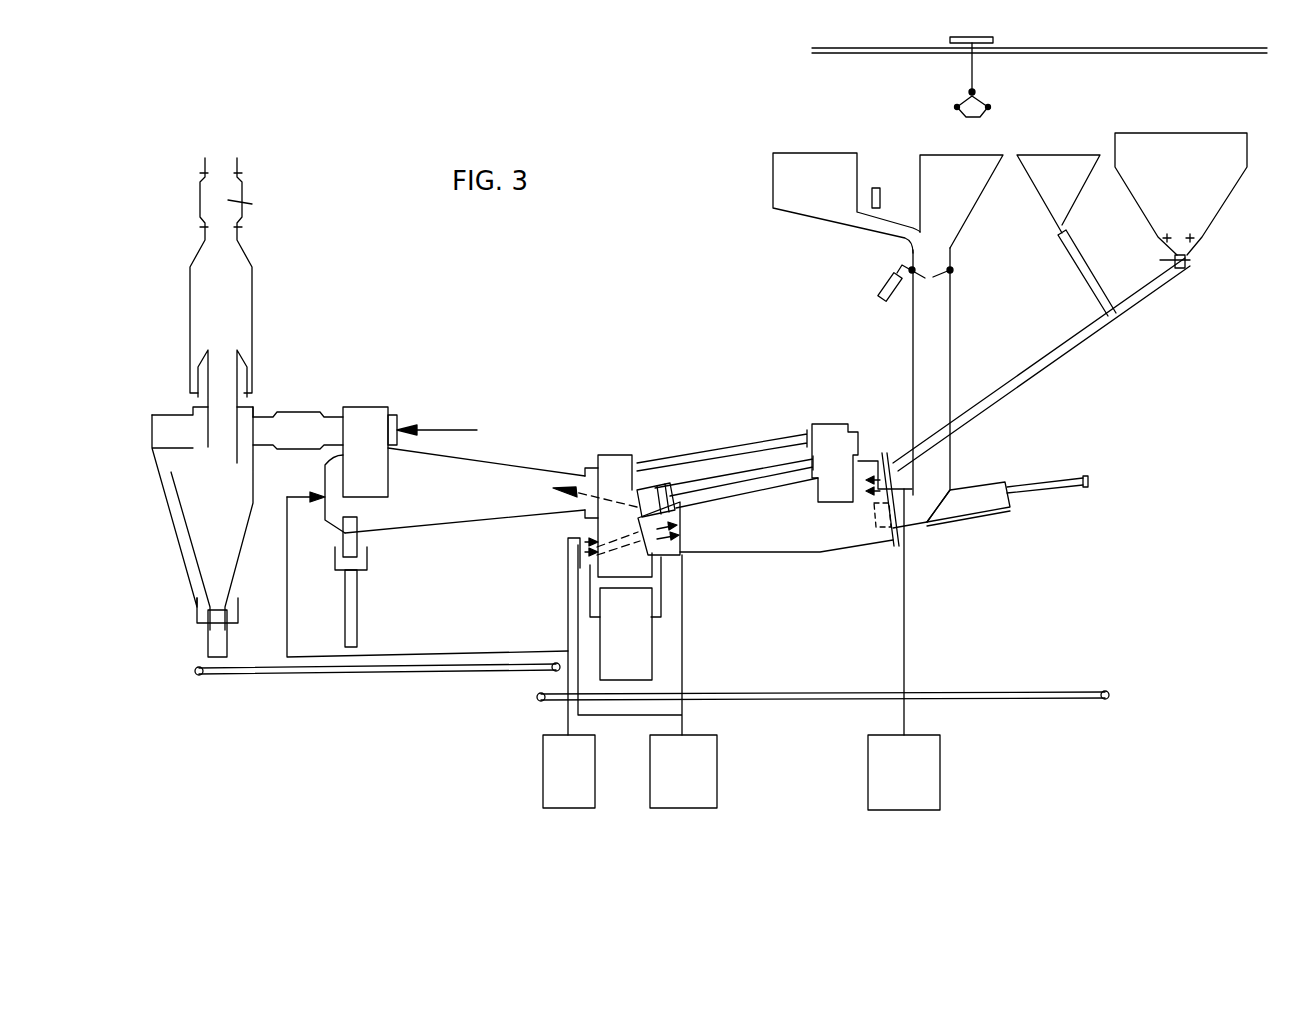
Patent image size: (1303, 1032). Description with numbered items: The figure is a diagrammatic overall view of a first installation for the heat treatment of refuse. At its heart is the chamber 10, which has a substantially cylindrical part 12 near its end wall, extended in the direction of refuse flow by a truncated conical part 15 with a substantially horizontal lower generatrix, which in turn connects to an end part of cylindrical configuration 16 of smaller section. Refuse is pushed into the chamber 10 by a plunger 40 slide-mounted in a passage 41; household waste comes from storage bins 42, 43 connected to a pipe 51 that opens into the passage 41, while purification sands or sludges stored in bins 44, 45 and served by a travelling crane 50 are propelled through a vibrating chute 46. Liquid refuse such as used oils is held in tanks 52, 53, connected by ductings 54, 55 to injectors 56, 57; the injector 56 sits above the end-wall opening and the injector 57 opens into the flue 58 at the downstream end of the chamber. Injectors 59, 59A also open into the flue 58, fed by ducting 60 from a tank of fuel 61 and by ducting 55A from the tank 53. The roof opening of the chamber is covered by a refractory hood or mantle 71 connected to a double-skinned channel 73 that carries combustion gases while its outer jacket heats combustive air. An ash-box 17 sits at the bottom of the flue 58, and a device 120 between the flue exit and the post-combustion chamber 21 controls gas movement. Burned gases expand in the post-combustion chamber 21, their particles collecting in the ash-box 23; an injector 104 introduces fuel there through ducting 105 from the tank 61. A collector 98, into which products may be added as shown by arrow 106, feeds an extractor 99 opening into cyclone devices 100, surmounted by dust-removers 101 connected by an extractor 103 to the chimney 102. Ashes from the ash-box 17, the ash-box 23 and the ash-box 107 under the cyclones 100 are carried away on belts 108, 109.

The chamber 10 is at (785, 562).
The cylindrical part 12 is at (865, 550).
The truncated conical part 15 is at (708, 556).
The end part of cylindrical configuration 16 is at (663, 578).
The ash-box 17 is at (626, 634).
The post-combustion chamber 21 is at (510, 488).
The ash-box 23 is at (367, 560).
The plunger 40 is at (990, 512).
The passage 41 is at (925, 527).
The storage bin 42 is at (815, 155).
The storage bin 43 is at (928, 158).
The bin 44 is at (1062, 160).
The bin 45 is at (1215, 148).
The vibrating chute 46 is at (1045, 367).
The travelling crane 50 is at (993, 71).
The pipe 51 is at (950, 340).
The tank 52 is at (940, 775).
The tank 53 is at (717, 772).
The ducting 54 is at (905, 634).
The ducting 55 is at (682, 665).
The ducting 55A is at (612, 716).
The injector 56 is at (892, 465).
The injector 57 is at (650, 487).
The flue 58 is at (620, 455).
The injector 59 is at (585, 543).
The injector 59A is at (585, 553).
The ducting 60 is at (568, 618).
The tank of fuel 61 is at (545, 770).
The hood or mantle 71 is at (830, 423).
The double-skinned channel 73 is at (745, 418).
The collector 98 is at (378, 410).
The extractor 99 is at (300, 415).
The cyclone devices 100 is at (224, 545).
The dust-removers 101 is at (252, 312).
The chimney 102 is at (238, 160).
The extractor 103 is at (244, 200).
The injector 104 is at (300, 496).
The ducting 105 is at (478, 652).
The arrow 106 is at (432, 430).
The ash-box 107 is at (215, 640).
The belt 108 is at (290, 672).
The belt 109 is at (820, 692).
The device 120 is at (585, 468).